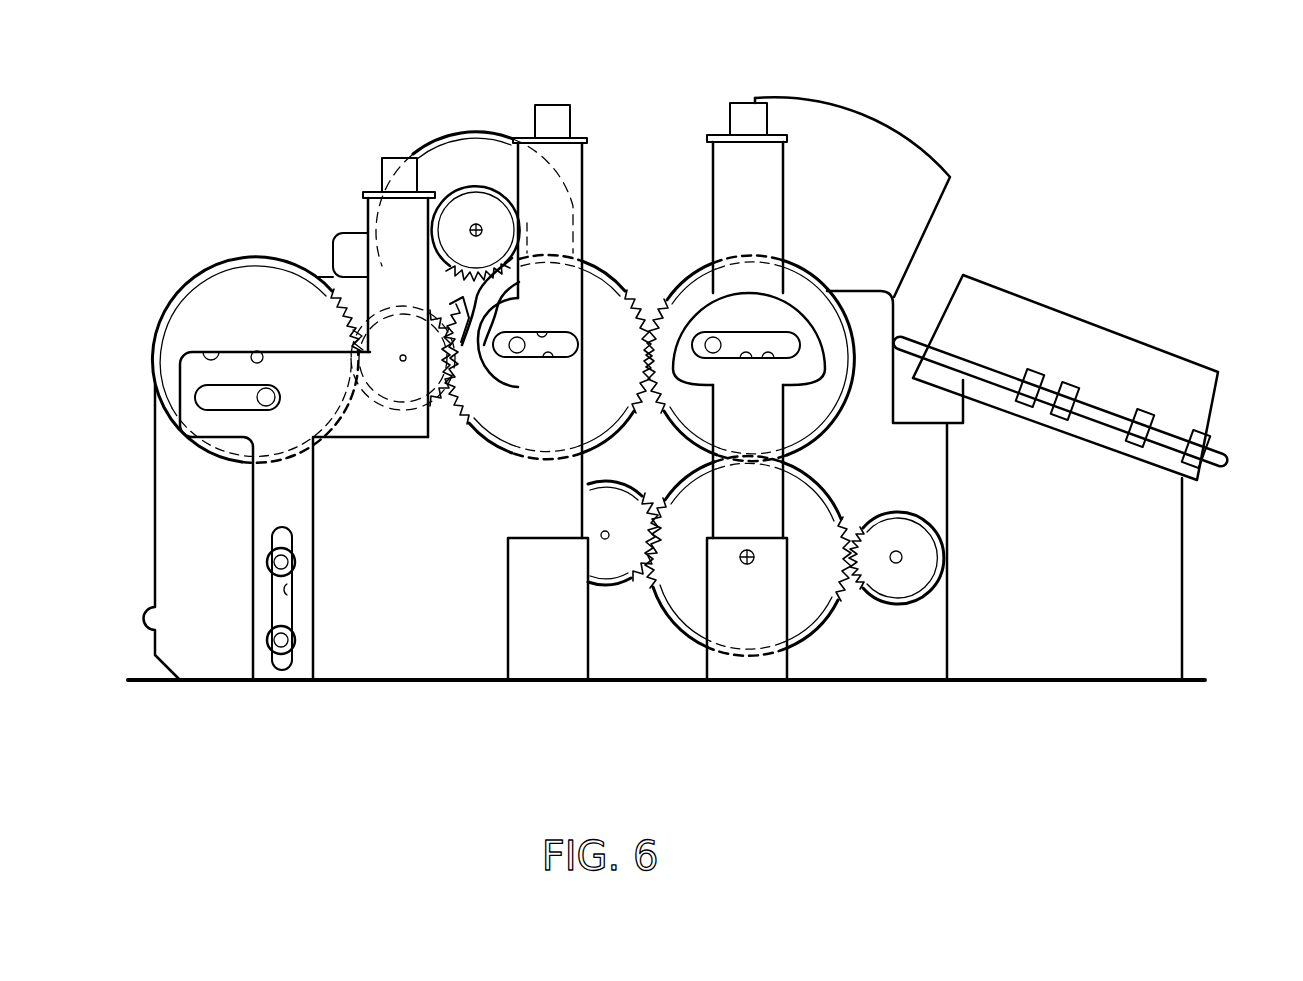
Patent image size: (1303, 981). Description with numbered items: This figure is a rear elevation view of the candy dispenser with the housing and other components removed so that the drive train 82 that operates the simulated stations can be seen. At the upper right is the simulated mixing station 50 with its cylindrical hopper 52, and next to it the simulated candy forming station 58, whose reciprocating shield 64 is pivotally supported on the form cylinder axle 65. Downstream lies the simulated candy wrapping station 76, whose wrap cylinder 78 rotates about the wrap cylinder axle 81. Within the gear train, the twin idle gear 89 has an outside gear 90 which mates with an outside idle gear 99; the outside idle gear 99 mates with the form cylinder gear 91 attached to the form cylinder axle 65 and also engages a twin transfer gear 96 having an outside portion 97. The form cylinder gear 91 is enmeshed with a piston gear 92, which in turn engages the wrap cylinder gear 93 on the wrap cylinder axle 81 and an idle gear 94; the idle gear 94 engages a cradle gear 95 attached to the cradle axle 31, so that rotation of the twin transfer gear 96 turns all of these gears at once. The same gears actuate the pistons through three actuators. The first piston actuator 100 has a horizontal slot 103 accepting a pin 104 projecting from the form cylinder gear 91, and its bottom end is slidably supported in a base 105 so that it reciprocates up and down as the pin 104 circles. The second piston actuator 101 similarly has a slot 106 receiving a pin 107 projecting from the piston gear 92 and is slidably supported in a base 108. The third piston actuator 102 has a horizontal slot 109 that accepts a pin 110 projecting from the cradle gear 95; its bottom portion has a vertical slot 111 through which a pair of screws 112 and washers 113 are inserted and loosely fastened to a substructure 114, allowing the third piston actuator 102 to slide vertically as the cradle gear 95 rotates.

The cradle axle 31 is at (258, 352).
The simulated mixing station 50 is at (1108, 358).
The cylindrical hopper 52 is at (1197, 383).
The simulated candy forming station 58 is at (774, 90).
The reciprocating shield 64 is at (878, 132).
The form cylinder axle 65 is at (722, 335).
The simulated candy wrapping station 76 is at (494, 120).
The wrap cylinder 78 is at (500, 143).
The wrap cylinder axle 81 is at (473, 226).
The drive train 82 is at (146, 274).
The twin idle gear 89 is at (893, 578).
The outside gear 90 is at (922, 557).
The form cylinder gear 91 is at (836, 352).
The piston gear 92 is at (500, 418).
The wrap cylinder gear 93 is at (474, 198).
The idle gear 94 is at (423, 415).
The cradle gear 95 is at (173, 340).
The twin transfer gear 96 is at (600, 578).
The outside portion 97 is at (604, 548).
The outside idle gear 99 is at (800, 610).
The first piston actuator 100 is at (765, 208).
The second piston actuator 101 is at (570, 162).
The third piston actuator 102 is at (367, 203).
The horizontal slot 103 is at (780, 352).
The pin 104 is at (718, 352).
The base 105 is at (723, 660).
The slot 106 is at (543, 340).
The pin 107 is at (519, 352).
The base 108 is at (523, 647).
The horizontal slot 109 is at (215, 357).
The pin 110 is at (263, 397).
The vertical slot 111 is at (288, 590).
The screws 112 is at (267, 563).
The washers 113 is at (268, 566).
The substructure 114 is at (213, 642).